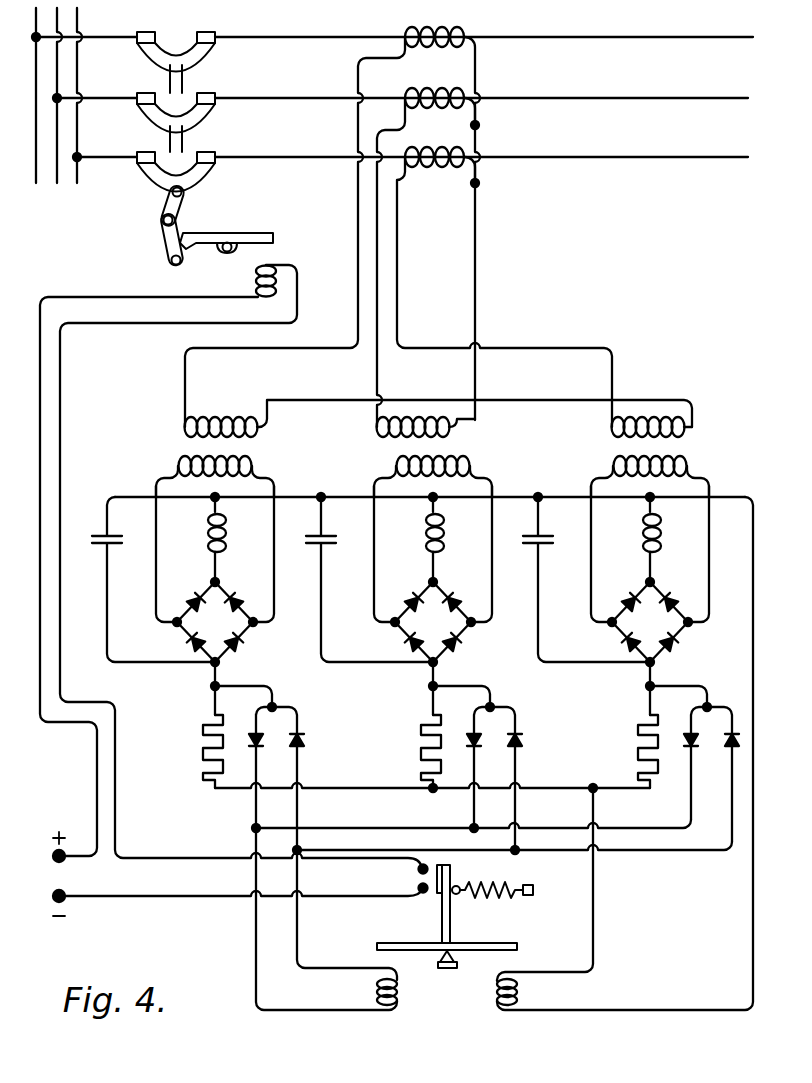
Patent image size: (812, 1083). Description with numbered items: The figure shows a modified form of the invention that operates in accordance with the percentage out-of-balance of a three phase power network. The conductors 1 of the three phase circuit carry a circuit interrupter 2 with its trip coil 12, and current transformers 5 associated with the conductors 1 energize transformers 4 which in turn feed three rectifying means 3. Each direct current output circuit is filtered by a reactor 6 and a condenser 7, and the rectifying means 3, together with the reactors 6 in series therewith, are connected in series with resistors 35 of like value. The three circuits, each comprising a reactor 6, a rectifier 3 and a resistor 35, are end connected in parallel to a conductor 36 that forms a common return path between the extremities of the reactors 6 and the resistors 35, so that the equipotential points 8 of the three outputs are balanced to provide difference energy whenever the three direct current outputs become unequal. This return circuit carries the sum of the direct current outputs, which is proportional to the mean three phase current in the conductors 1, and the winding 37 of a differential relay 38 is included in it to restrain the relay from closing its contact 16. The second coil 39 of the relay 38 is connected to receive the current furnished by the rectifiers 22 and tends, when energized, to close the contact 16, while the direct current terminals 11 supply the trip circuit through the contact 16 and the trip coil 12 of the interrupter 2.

The conductors 1 is at (643, 40).
The circuit interrupter 2 is at (205, 149).
The rectifying means 3 is at (432, 576).
The transformers 4 is at (437, 457).
The current transformers 5 is at (434, 109).
The reactors 6 is at (424, 539).
The condensers 7 is at (371, 579).
The equipotential points 8 is at (211, 687).
The direct current terminals 11 is at (219, 874).
The trip coil 12 is at (252, 278).
The contact 16 is at (407, 879).
The rectifiers 22 is at (524, 728).
The resistors 35 is at (414, 751).
The conductor 36 is at (753, 893).
The winding 37 is at (545, 916).
The relay 38 is at (455, 916).
The coil 39 is at (388, 1011).